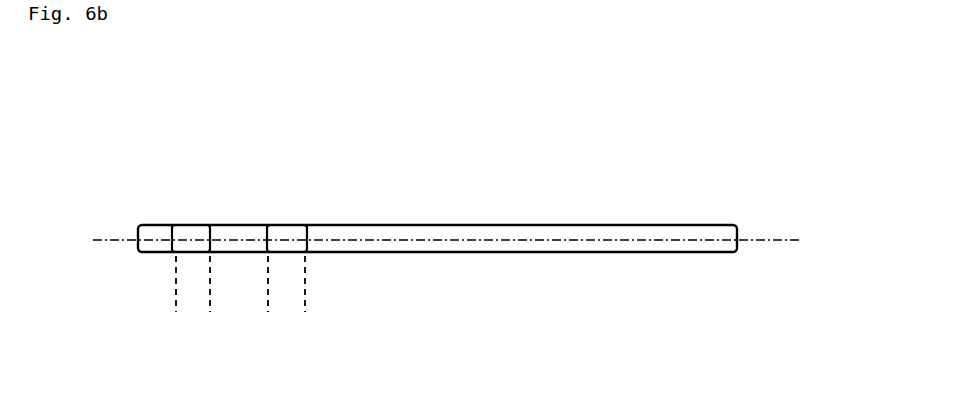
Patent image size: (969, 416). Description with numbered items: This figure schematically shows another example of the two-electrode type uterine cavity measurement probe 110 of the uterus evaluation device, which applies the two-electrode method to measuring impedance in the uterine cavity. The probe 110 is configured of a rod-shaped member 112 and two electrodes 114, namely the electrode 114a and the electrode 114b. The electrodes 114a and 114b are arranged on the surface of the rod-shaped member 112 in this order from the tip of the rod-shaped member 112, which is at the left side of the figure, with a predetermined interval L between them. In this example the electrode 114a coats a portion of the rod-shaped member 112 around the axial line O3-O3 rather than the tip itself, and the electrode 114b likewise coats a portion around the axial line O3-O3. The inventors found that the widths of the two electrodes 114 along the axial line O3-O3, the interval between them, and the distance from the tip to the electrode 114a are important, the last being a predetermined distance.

The two-electrode type uterine cavity measurement probe 110 is at (407, 223).
The rod-shaped member 112 is at (585, 223).
The electrodes 114 is at (209, 147).
The electrode 114a is at (172, 224).
The electrode 114b is at (264, 191).
The axial line O3 is at (445, 241).
The predetermined interval L is at (362, 320).